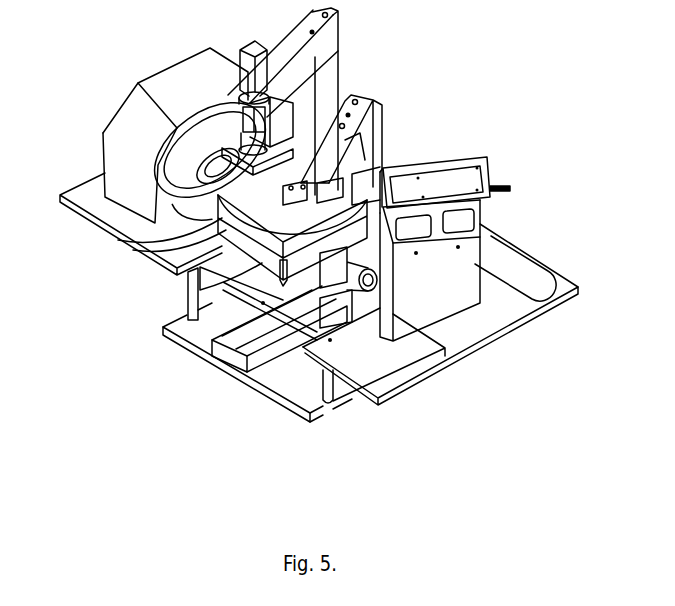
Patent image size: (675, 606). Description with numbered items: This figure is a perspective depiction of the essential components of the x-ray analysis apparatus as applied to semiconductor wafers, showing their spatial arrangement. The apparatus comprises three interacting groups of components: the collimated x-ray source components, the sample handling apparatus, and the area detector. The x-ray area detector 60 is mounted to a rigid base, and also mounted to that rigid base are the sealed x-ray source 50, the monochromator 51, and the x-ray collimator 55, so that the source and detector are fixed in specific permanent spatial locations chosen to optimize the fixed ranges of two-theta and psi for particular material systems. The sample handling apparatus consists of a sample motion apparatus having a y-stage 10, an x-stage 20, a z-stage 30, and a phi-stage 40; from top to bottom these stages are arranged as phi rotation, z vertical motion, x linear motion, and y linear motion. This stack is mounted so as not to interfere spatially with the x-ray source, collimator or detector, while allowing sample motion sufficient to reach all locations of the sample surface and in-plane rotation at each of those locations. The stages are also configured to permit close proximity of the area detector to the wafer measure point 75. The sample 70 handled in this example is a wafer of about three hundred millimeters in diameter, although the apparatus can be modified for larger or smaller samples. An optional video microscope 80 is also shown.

The y-stage 10 is at (215, 360).
The x-stage 20 is at (200, 347).
The z-stage 30 is at (188, 302).
The phi-stage 40 is at (160, 260).
The sealed x-ray source 50 is at (463, 163).
The monochromator 51 is at (358, 152).
The x-ray collimator 55 is at (328, 85).
The x-ray area detector 60 is at (122, 103).
The sample 70 is at (373, 100).
The wafer measure point 75 is at (127, 242).
The video microscope 80 is at (245, 45).